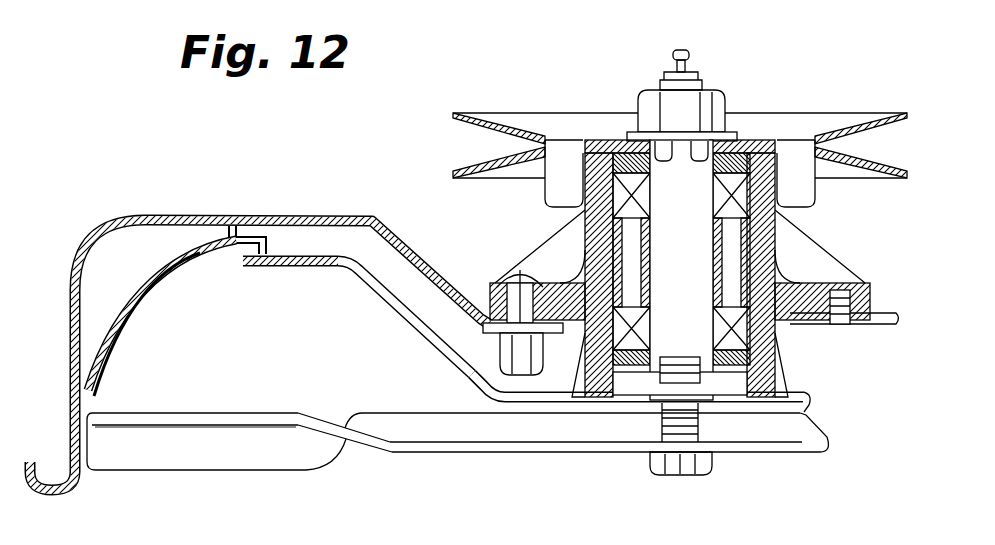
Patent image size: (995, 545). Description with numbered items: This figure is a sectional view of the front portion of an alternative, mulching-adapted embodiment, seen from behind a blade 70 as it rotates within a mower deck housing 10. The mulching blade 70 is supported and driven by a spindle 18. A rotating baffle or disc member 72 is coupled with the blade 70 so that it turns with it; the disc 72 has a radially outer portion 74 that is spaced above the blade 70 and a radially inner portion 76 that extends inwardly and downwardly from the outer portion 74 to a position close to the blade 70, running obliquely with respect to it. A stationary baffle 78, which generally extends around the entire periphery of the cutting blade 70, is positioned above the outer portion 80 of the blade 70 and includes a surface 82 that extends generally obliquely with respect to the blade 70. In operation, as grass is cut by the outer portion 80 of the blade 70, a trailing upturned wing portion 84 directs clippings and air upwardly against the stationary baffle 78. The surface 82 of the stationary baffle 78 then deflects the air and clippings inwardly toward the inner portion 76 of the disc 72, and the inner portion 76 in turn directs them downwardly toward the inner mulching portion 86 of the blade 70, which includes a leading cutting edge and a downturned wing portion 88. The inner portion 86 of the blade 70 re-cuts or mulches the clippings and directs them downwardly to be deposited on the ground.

The mower deck housing 10 is at (348, 205).
The spindle 18 is at (694, 219).
The blade 70 is at (388, 462).
The disc member 72 is at (378, 313).
The radially outer portion 74 is at (300, 268).
The radially inner portion 76 is at (428, 352).
The stationary baffle 78 is at (110, 316).
The outer portion 80 is at (152, 478).
The surface 82 is at (166, 263).
The trailing upturned wing portion 84 is at (186, 413).
The inner mulching portion 86 is at (480, 465).
The downturned wing portion 88 is at (418, 432).